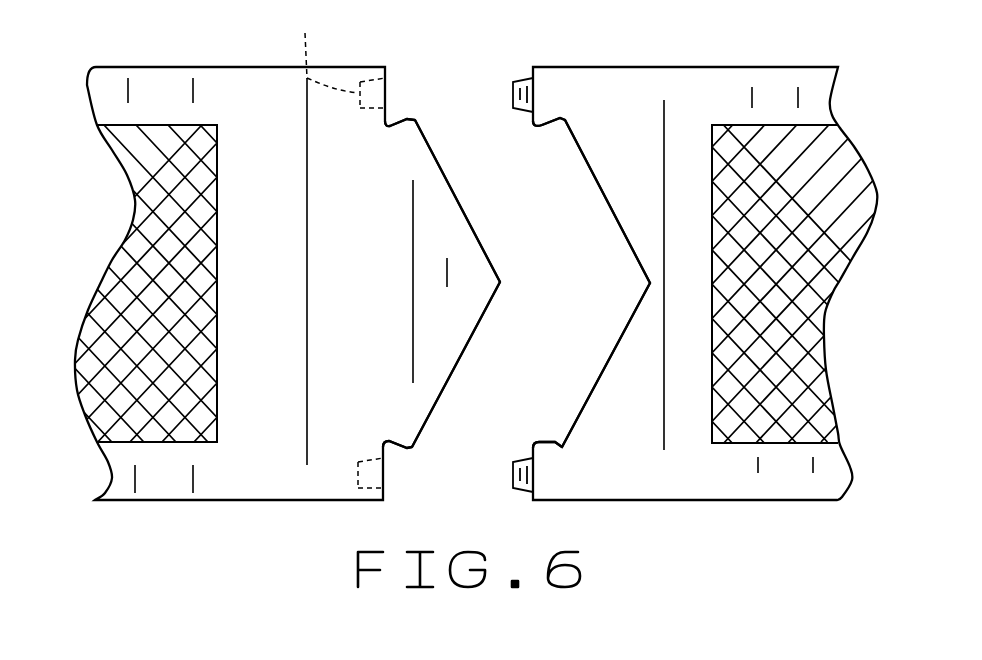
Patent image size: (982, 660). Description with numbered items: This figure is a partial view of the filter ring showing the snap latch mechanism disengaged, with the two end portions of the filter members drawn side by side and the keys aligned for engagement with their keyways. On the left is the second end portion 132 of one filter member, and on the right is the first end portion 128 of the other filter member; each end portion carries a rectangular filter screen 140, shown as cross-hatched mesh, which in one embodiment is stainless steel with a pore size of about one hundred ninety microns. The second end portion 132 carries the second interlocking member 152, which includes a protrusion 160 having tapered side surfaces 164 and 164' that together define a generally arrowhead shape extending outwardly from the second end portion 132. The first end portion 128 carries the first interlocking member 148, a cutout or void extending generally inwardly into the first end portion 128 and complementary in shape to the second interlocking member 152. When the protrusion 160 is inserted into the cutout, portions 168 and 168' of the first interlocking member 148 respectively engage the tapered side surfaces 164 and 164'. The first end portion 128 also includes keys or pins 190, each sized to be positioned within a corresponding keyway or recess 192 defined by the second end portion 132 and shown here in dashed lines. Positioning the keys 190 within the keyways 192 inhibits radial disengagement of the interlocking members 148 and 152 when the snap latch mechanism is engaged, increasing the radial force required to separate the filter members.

The first end portion 128 is at (690, 67).
The second end portion 132 is at (219, 67).
The filter screen 140 is at (97, 288).
The first interlocking member 148 is at (586, 157).
The second interlocking member 152 is at (470, 222).
The protrusion 160 is at (474, 338).
The tapered side surface 164 is at (416, 70).
The tapered side surface 164' is at (430, 476).
The portion of first interlocking member 168 is at (535, 144).
The portion of first interlocking member 168' is at (537, 407).
The key 190 is at (517, 82).
The keyway 192 is at (335, 250).